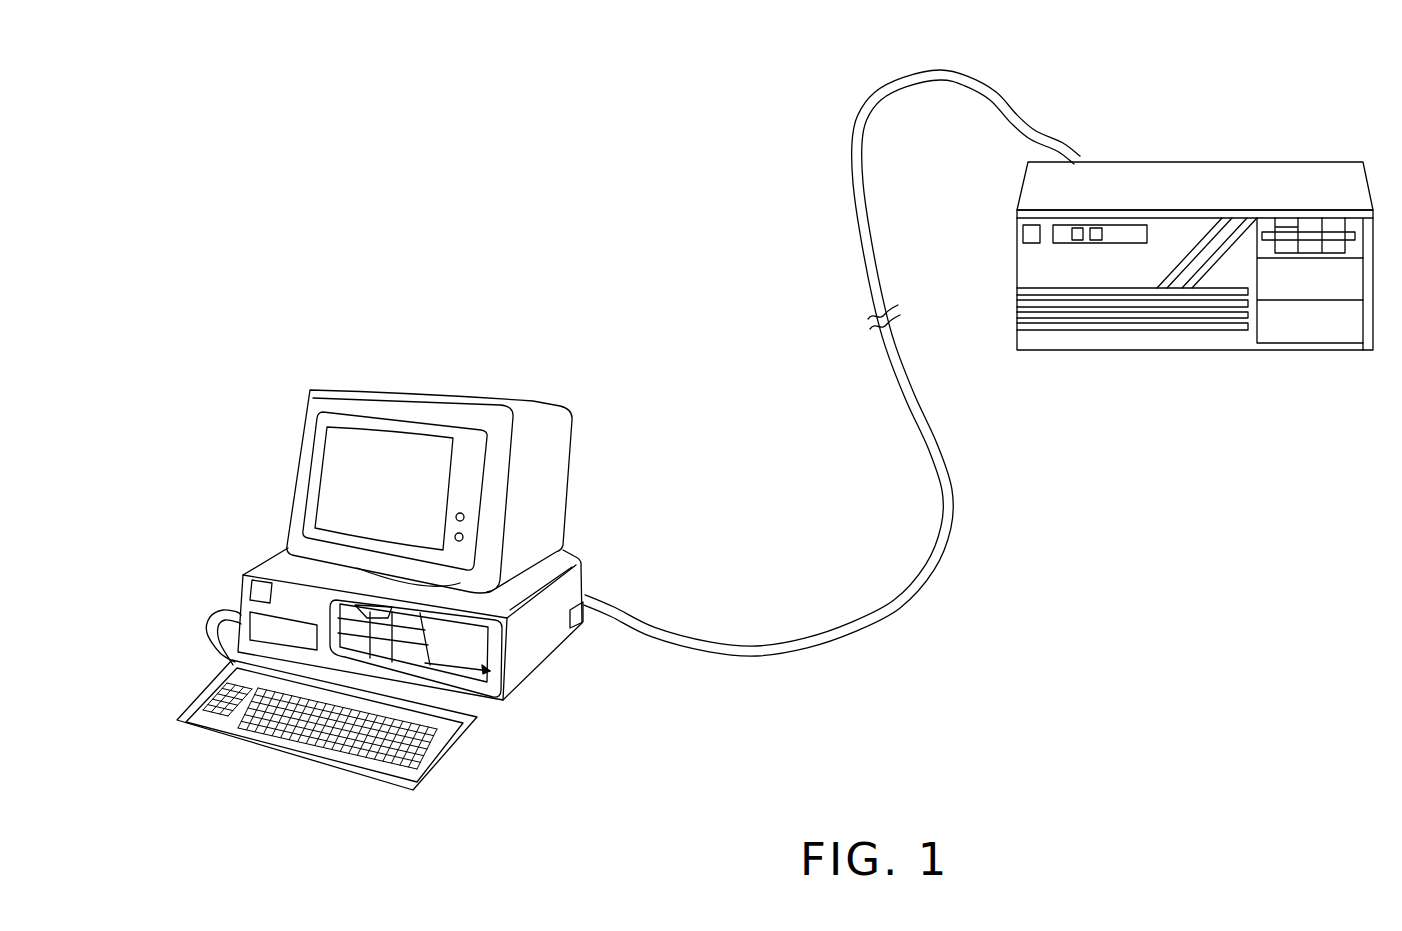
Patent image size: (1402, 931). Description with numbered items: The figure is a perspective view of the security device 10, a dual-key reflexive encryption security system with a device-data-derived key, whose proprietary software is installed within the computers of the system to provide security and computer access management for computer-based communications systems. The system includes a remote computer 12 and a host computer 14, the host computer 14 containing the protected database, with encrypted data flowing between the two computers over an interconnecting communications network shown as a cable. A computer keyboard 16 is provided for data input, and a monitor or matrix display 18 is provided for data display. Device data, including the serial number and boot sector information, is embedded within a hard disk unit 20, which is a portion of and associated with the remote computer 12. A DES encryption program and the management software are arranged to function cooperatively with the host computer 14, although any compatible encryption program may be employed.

The security device 10 is at (300, 477).
The remote computer 12 is at (400, 388).
The host computer 14 is at (1172, 160).
The computer keyboard 16 is at (460, 748).
The monitor or matrix display 18 is at (408, 477).
The hard disk unit 20 is at (523, 685).